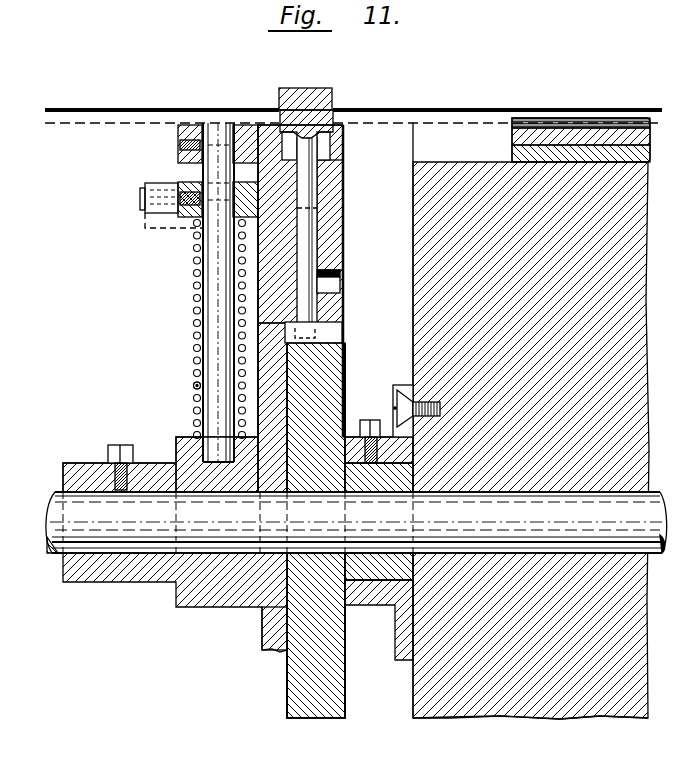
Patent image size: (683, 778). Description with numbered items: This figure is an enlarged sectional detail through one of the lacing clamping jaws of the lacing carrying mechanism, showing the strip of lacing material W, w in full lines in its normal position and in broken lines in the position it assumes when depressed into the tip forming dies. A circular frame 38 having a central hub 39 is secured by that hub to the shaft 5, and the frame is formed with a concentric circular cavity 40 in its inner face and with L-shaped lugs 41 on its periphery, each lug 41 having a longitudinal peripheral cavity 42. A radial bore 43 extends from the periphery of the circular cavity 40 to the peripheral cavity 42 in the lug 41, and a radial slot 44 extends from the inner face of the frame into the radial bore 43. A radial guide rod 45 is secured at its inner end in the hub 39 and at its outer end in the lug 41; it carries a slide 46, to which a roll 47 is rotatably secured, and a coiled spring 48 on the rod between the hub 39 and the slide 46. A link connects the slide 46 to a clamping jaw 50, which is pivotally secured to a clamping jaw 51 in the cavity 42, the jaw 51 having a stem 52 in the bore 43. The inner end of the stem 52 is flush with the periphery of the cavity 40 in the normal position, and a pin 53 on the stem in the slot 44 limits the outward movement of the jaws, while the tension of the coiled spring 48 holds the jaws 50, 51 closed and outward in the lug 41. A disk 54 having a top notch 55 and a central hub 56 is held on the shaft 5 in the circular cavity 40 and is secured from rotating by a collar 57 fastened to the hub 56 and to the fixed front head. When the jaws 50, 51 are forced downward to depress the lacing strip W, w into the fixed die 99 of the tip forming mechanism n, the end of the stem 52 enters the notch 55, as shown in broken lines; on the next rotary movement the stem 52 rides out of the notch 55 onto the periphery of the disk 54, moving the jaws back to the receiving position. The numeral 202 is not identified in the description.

The strip of lacing material W is at (101, 108).
The strip of lacing material w is at (85, 124).
The shaft 5 is at (356, 522).
The circular frame 38 is at (344, 226).
The central hub 39 is at (177, 606).
The concentric circular cavity 40 is at (262, 618).
The L-shaped lug 41 is at (182, 128).
The longitudinal peripheral cavity 42 is at (325, 150).
The radial bore 43 is at (318, 252).
The radial slot 44 is at (341, 297).
The radial guide rod 45 is at (210, 329).
The slide 46 is at (190, 183).
The roll 47 is at (152, 200).
The coiled spring 48 is at (194, 386).
The clamping jaw 50 is at (315, 90).
The clamping jaw 51 is at (327, 118).
The stem 52 is at (305, 192).
The pin 53 is at (341, 276).
The disk 54 is at (285, 688).
The top notch 55 is at (343, 335).
The central hub 56 is at (385, 568).
The collar 57 is at (398, 658).
The fixed die 99 is at (563, 125).
The base block 202 is at (518, 690).
The tip forming mechanism n is at (431, 704).